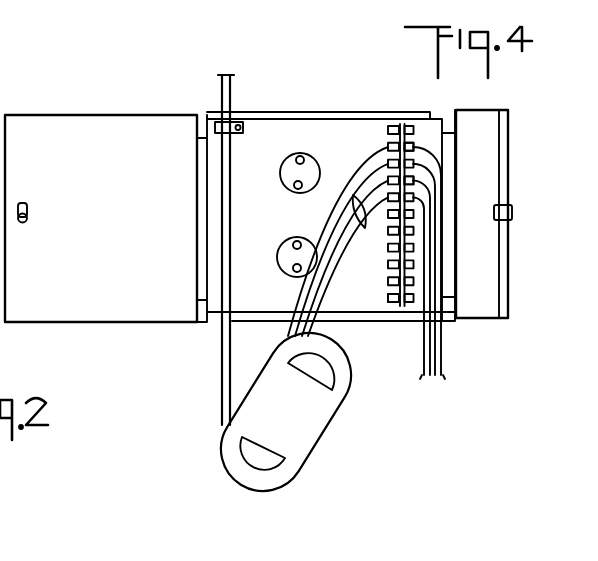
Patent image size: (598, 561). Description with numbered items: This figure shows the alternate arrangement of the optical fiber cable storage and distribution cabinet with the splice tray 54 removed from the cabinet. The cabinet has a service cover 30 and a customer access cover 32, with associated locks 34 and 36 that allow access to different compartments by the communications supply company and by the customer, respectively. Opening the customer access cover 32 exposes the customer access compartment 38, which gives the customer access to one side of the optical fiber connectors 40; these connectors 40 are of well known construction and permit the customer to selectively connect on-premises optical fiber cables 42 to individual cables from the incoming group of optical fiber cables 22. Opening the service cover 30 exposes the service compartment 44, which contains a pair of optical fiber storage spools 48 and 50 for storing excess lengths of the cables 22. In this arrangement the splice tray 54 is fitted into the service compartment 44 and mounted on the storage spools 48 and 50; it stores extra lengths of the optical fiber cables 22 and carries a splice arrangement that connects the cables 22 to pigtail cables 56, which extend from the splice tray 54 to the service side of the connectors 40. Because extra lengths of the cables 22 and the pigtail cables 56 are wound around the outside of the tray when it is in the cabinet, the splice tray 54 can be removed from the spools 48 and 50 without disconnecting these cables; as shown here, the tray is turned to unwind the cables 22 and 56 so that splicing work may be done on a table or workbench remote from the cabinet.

The optical fiber cables 22 is at (222, 392).
The service cover 30 is at (116, 127).
The customer access cover 32 is at (481, 119).
The lock 34 is at (30, 217).
The lock 36 is at (512, 212).
The customer access compartment 38 is at (421, 128).
The optical fiber connectors 40 is at (413, 181).
The on-premises optical fiber cables 42 is at (441, 358).
The service compartment 44 is at (310, 128).
The optical fiber storage spool 48 is at (281, 170).
The optical fiber storage spool 50 is at (280, 250).
The splice tray 54 is at (333, 420).
The pigtail cables 56 is at (364, 229).